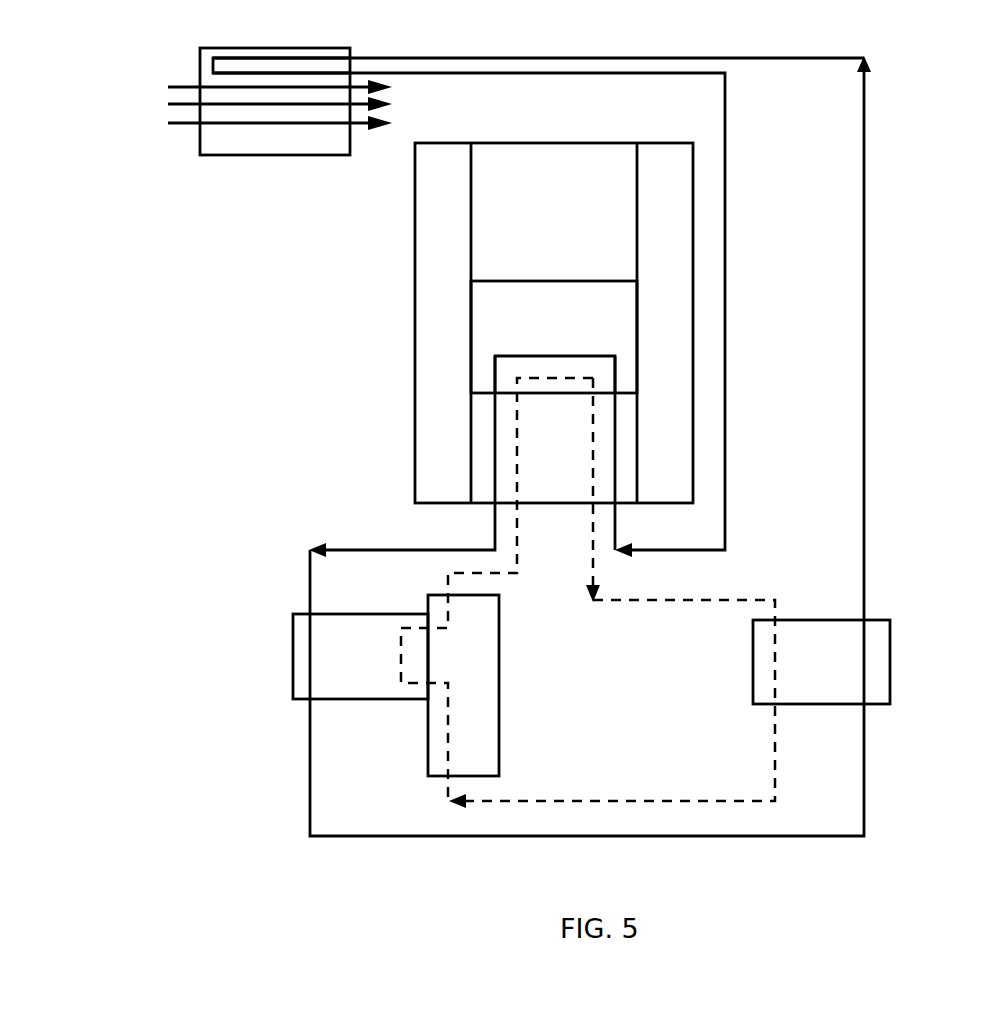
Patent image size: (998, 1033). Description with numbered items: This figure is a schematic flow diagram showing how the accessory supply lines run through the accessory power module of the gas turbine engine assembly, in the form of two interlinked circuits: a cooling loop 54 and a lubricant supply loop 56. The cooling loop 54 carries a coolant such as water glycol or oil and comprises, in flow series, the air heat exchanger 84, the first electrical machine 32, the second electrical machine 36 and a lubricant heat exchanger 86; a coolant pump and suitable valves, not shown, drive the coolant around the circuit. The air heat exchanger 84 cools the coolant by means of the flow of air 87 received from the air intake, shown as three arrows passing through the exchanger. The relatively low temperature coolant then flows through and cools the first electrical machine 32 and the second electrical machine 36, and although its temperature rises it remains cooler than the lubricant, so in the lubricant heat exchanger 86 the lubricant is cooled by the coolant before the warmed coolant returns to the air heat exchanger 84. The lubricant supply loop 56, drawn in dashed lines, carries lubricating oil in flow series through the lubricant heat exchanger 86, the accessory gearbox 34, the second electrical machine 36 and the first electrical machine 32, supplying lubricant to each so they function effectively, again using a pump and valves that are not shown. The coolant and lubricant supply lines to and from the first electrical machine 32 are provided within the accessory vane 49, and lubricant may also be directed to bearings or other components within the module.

The first electrical machine 32 is at (554, 337).
The accessory gearbox 34 is at (483, 647).
The second electrical machine 36 is at (290, 640).
The accessory vane 49 is at (487, 432).
The cooling loop 54 is at (866, 221).
The lubricant supply loop 56 is at (775, 775).
The air heat exchanger 84 is at (197, 153).
The lubricant heat exchanger 86 is at (821, 662).
The flow of air 87 is at (172, 84).